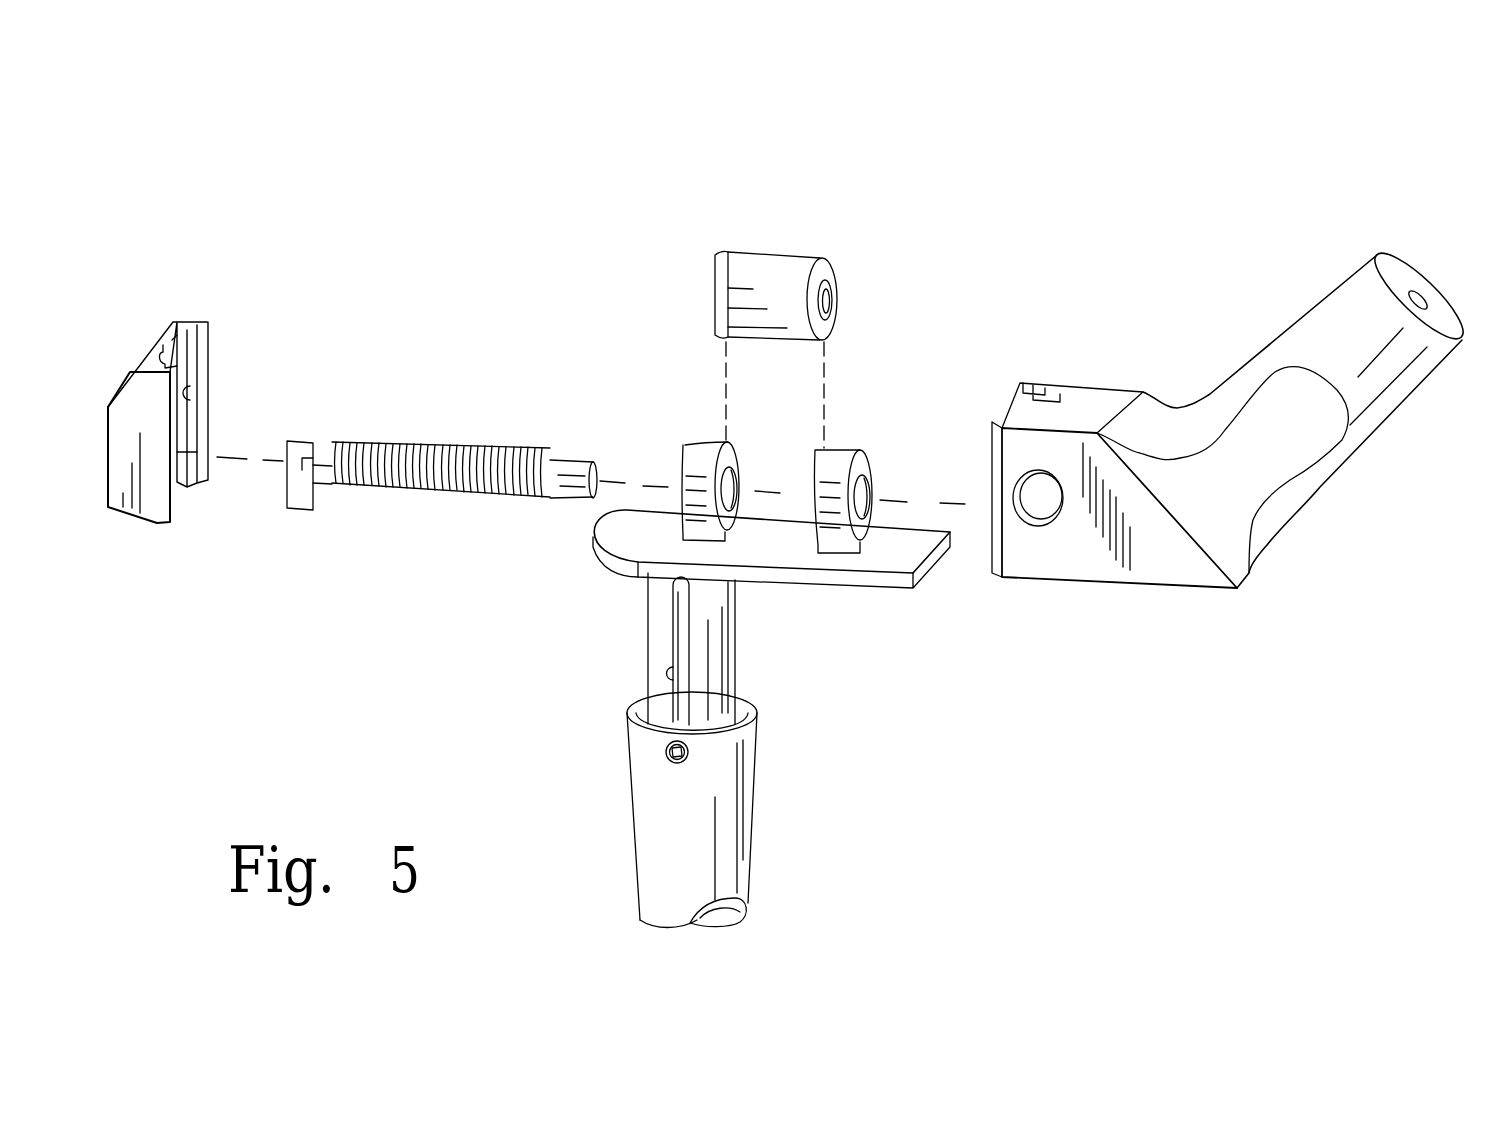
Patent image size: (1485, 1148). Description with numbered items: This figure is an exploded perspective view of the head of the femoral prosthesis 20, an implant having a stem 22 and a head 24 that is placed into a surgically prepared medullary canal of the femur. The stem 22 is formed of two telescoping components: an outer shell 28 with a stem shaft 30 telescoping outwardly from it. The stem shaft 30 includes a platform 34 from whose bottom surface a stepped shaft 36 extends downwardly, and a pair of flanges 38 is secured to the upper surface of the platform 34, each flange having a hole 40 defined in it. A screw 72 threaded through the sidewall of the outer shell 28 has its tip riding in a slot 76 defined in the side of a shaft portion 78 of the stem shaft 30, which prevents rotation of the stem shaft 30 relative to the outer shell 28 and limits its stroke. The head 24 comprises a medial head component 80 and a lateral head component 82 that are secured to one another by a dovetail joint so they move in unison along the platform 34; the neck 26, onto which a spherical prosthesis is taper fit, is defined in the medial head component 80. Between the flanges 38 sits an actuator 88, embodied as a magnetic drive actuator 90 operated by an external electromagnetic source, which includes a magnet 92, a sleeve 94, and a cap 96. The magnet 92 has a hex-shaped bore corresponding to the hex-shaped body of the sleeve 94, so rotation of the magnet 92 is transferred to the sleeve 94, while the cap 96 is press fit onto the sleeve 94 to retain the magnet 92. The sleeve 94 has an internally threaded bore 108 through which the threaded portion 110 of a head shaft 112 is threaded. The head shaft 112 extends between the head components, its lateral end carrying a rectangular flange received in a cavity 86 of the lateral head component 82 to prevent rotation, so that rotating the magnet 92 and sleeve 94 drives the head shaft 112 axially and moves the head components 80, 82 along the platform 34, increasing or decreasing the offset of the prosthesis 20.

The femoral prosthesis 20 is at (1148, 140).
The stem 22 is at (803, 657).
The head 24 is at (1232, 445).
The neck 26 is at (1380, 392).
The outer shell 28 is at (732, 820).
The stem shaft 30 is at (714, 674).
The platform 34 is at (908, 544).
The shaft 36 is at (657, 623).
The flanges 38 is at (708, 440).
The hole 40 is at (738, 482).
The screw 72 is at (666, 754).
The slot 76 is at (676, 678).
The shaft portion 78 is at (722, 640).
The medial head component 80 is at (1185, 568).
The lateral head component 82 is at (190, 318).
The cavity 86 is at (194, 392).
The actuator 88 is at (850, 158).
The magnetic drive actuator 90 is at (795, 256).
The magnet 92 is at (768, 265).
The sleeve 94 is at (826, 268).
The cap 96 is at (725, 252).
The threaded bore 108 is at (830, 297).
The threaded portion 110 is at (405, 447).
The head shaft 112 is at (505, 440).